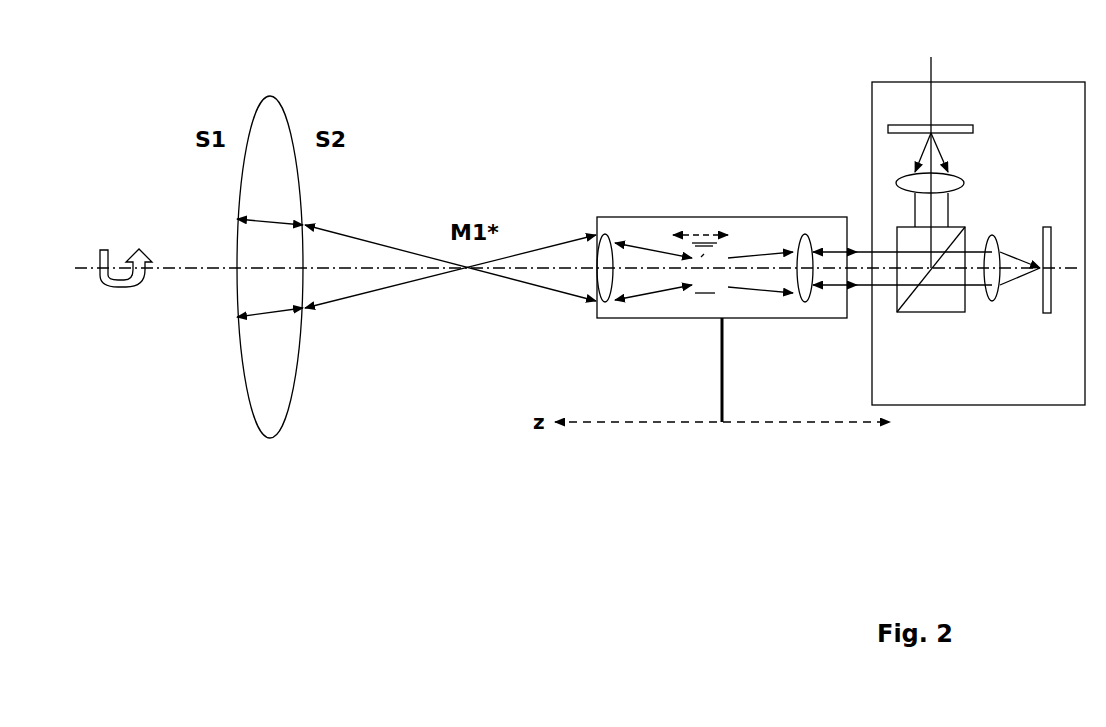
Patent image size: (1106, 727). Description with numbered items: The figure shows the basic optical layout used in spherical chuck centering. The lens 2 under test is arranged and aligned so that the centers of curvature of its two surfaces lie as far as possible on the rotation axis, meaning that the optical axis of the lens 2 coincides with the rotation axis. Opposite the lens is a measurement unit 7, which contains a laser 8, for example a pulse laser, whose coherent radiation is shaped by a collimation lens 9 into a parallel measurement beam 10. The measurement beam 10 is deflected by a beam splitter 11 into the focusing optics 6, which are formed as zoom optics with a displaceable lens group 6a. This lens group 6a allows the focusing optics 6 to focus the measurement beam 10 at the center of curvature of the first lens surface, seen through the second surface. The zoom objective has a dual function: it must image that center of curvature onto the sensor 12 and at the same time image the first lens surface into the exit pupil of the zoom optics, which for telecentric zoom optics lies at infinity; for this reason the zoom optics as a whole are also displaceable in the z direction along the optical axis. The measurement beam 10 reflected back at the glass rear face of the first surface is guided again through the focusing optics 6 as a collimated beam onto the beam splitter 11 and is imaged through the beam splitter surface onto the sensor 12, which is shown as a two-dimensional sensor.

The lens 2 is at (268, 97).
The focusing optics 6 is at (722, 266).
The displaceable lens group 6a is at (693, 223).
The measurement unit 7 is at (949, 207).
The laser 8 is at (930, 127).
The collimation lens 9 is at (900, 187).
The measurement beam 10 is at (932, 208).
The beam splitter 11 is at (940, 302).
The sensor 12 is at (1052, 270).